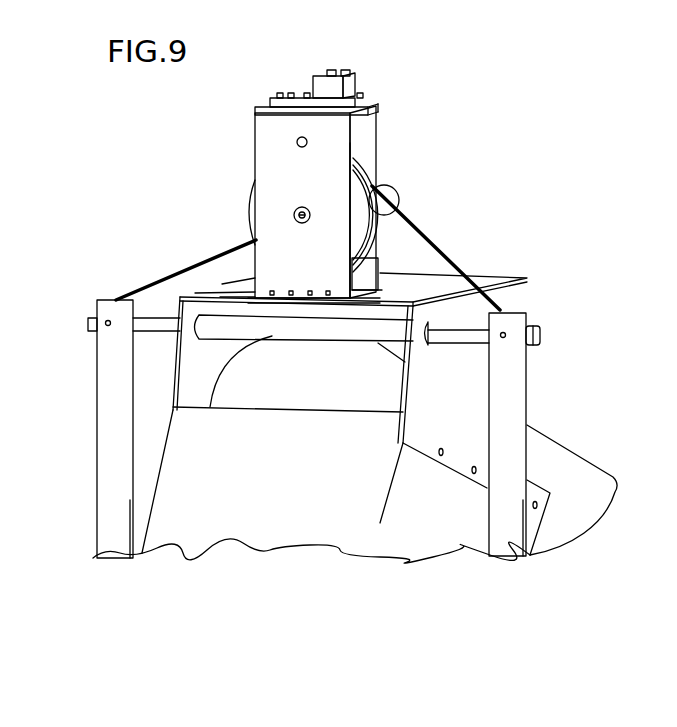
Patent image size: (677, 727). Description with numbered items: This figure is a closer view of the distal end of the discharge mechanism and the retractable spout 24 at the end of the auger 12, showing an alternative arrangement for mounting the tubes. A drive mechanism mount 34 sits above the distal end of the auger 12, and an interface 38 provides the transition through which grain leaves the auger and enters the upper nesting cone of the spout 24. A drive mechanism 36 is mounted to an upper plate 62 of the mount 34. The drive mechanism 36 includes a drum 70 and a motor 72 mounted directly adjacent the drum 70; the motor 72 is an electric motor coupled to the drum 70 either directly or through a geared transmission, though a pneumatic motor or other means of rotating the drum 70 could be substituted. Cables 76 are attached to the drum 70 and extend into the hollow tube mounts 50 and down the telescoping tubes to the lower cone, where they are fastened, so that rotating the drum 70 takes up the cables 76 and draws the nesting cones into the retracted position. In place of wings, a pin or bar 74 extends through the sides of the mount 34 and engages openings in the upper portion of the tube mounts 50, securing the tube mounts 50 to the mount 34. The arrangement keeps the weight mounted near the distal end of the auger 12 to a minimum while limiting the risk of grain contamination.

The drive mechanism 36 is at (400, 163).
The drum 70 is at (360, 222).
The motor 72 is at (397, 195).
The cables 76 is at (430, 241).
The drive mechanism mount 34 is at (456, 311).
The auger 12 is at (265, 370).
The retractable spout 24 is at (189, 320).
The upper plate 62 is at (235, 292).
The pin or bar 74 is at (540, 336).
The tube mount 50 is at (112, 381).
The interface 38 is at (208, 533).